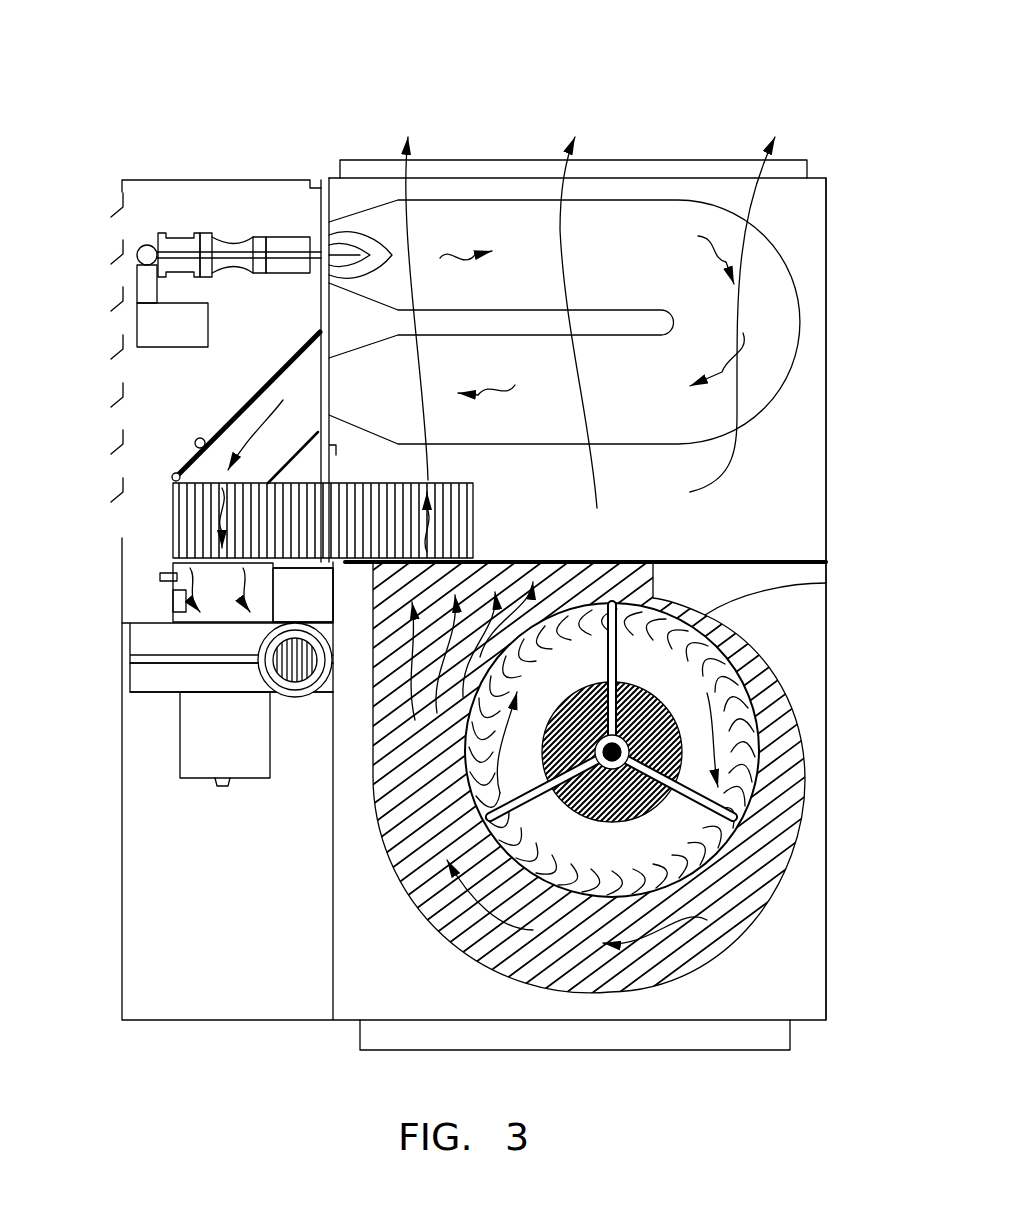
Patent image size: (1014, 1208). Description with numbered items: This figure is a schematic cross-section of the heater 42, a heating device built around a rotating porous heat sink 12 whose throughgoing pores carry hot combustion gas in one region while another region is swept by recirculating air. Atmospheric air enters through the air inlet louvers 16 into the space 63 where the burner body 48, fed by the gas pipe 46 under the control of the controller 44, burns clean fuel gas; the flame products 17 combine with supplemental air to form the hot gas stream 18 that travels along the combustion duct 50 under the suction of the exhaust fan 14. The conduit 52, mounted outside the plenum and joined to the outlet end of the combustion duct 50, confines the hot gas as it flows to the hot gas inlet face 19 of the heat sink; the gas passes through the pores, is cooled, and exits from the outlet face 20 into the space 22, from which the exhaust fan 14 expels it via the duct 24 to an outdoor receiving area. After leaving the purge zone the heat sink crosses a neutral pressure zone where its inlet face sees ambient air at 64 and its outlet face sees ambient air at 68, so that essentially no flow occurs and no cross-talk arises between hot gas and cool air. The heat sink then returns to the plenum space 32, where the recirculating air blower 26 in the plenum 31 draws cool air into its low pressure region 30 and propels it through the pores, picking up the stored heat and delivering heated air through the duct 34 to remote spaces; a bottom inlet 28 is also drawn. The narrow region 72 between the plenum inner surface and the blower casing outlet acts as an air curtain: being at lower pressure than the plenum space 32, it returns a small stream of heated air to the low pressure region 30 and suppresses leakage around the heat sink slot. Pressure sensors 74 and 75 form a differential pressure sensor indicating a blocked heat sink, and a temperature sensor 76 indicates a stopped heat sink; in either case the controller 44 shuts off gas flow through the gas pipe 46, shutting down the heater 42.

The heater 42 is at (136, 123).
The rotating heat sink 12 is at (172, 520).
The exhaust fan 14 is at (195, 678).
The air inlet louvers 16 is at (118, 258).
The flame products 17 is at (385, 248).
The hot gas stream 18 is at (445, 250).
The hot gas inlet face 19 is at (173, 478).
The outlet face 20 is at (215, 623).
The space 22 is at (170, 564).
The duct 24 is at (295, 697).
The recirculating air blower 26 is at (826, 585).
The bottom plenum 28 is at (660, 1050).
The low pressure region 30 is at (411, 981).
The plenum 31 is at (826, 445).
The plenum space 32 is at (595, 505).
The duct 34 is at (643, 178).
The controller 44 is at (137, 320).
The gas pipe 46 is at (137, 262).
The burner body 48 is at (200, 233).
The combustion duct 50 is at (505, 200).
The conduit 52 is at (223, 425).
The space 63 is at (210, 396).
The ambient air region 64 is at (262, 420).
The ambient air region 68 is at (297, 590).
The air curtain region 72 is at (340, 568).
The pressure sensor 74 is at (196, 440).
The pressure sensor 75 is at (162, 578).
The temperature sensor 76 is at (173, 600).